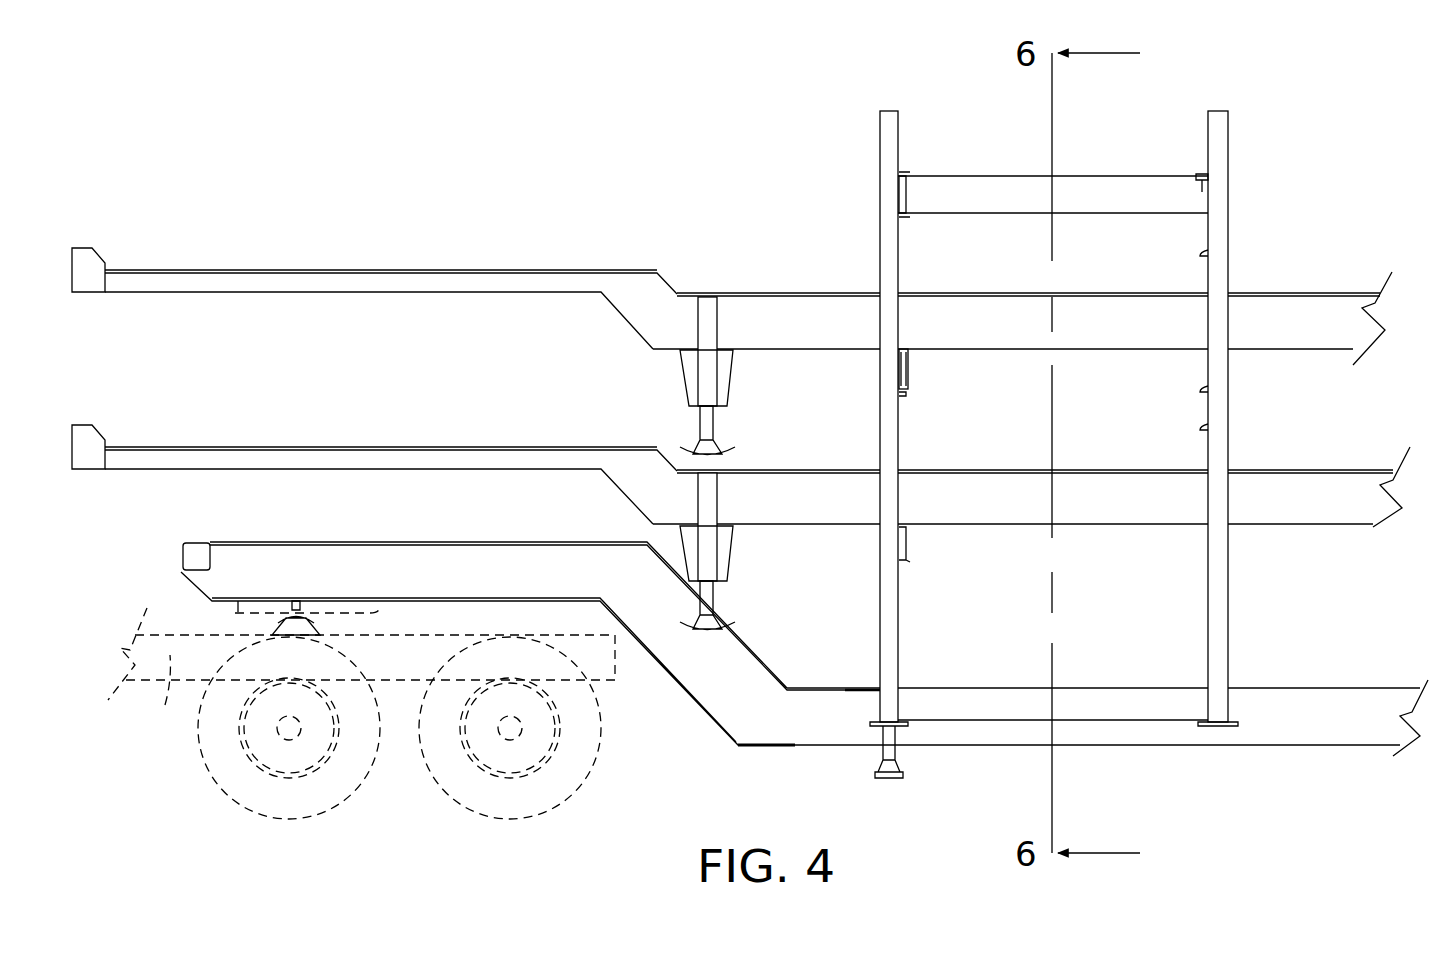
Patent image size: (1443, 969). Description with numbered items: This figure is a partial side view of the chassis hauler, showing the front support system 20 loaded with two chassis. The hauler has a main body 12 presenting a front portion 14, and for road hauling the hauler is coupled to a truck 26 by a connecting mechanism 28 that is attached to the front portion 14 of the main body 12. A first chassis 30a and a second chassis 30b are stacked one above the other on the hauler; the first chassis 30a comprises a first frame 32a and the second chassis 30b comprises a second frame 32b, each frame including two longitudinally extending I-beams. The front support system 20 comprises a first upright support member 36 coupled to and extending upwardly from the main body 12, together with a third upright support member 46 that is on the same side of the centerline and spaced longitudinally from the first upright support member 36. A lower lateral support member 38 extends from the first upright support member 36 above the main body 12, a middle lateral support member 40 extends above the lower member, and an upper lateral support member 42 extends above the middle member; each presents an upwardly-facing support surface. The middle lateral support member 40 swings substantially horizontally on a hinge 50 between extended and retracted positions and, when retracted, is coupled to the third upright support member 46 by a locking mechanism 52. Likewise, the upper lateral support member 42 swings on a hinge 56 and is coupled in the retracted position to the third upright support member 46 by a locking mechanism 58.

The main body 12 is at (1337, 689).
The front portion 14 is at (768, 719).
The front support system 20 is at (1053, 371).
The truck 26 is at (165, 705).
The connecting mechanism 28 is at (237, 620).
The first chassis 30a is at (410, 400).
The second chassis 30b is at (410, 222).
The first frame 32a is at (1303, 471).
The second frame 32b is at (1285, 295).
The first upright support member 36 is at (878, 146).
The lower lateral support member 38 is at (908, 543).
The middle lateral support member 40 is at (909, 372).
The upper lateral support member 42 is at (1030, 186).
The third upright support member 46 is at (1230, 146).
The hinge 50 is at (902, 395).
The locking mechanism 52 is at (1207, 398).
The hinge 56 is at (900, 175).
The locking mechanism 58 is at (1206, 172).